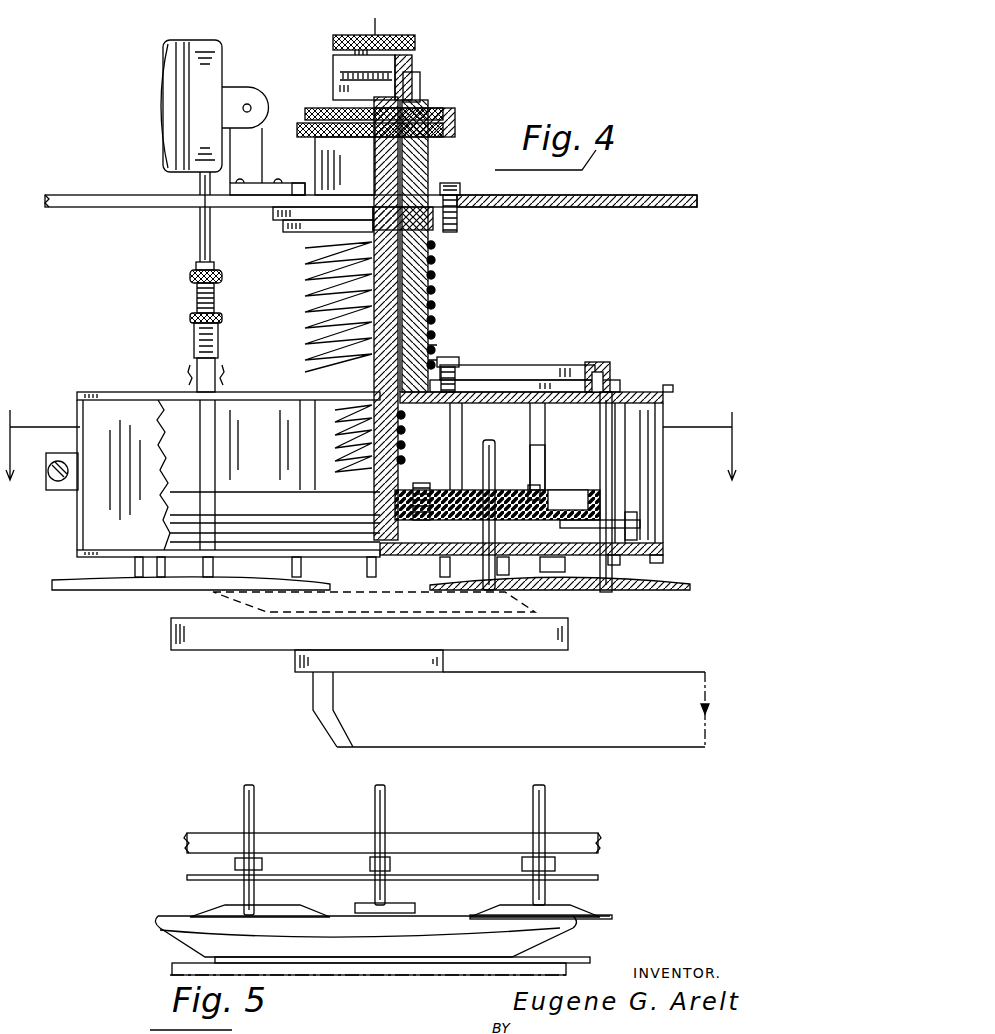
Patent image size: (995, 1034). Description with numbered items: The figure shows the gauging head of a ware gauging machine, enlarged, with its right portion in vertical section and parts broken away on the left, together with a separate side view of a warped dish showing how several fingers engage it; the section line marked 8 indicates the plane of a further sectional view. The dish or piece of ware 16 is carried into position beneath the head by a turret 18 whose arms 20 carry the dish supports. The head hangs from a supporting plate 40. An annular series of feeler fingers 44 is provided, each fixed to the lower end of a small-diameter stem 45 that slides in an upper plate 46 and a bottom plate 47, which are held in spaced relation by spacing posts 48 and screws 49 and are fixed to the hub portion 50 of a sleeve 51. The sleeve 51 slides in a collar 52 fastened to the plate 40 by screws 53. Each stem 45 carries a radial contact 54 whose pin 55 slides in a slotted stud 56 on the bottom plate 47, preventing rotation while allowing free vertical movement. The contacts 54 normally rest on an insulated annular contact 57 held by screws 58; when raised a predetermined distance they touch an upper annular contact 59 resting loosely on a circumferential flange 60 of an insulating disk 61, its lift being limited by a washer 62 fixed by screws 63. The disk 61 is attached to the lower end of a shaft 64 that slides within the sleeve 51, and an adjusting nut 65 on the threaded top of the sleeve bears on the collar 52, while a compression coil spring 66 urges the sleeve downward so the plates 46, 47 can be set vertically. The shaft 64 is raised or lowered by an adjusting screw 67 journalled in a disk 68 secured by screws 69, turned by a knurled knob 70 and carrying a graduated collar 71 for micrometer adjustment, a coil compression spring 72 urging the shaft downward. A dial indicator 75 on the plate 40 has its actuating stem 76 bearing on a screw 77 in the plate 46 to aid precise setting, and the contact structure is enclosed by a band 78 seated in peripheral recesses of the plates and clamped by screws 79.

In FIG. 4, the section line 8- 8 is at (369, 458).
In FIG. 4, the pieces of ware 16 is at (520, 610).
In FIG. 5, the pieces of ware 16 is at (382, 945).
In FIG. 4, the turret 18 is at (369, 634).
In FIG. 4, the arms 20 is at (502, 698).
In FIG. 4, the supporting plate 40 is at (625, 195).
In FIG. 4, the feeler fingers 44 is at (118, 597).
In FIG. 5, the feeler fingers 44 is at (275, 908).
In FIG. 4, the stem 45 is at (605, 428).
In FIG. 5, the stem 45 is at (545, 818).
In FIG. 4, the plate 46 is at (610, 392).
In FIG. 4, the bottom plate 47 is at (663, 556).
In FIG. 4, the spacing posts 48 is at (650, 480).
In FIG. 4, the screws 49 is at (672, 380).
In FIG. 4, the hub portion 50 is at (447, 357).
In FIG. 4, the sleeve 51 is at (412, 340).
In FIG. 4, the collar 52 is at (437, 257).
In FIG. 4, the screws 53 is at (455, 183).
In FIG. 4, the contact 54 is at (630, 512).
In FIG. 5, the contact 54 is at (262, 866).
In FIG. 4, the pin 55 is at (614, 565).
In FIG. 4, the slotted stud 56 is at (640, 522).
In FIG. 5, the annular contact 57 is at (598, 878).
In FIG. 4, the screws 58 is at (555, 565).
In FIG. 4, the upper annular contact 59 is at (568, 500).
In FIG. 5, the upper annular contact 59 is at (463, 832).
In FIG. 4, the circumferential flange 60 is at (515, 568).
In FIG. 4, the disk 61 is at (470, 488).
In FIG. 4, the washer 62 is at (548, 462).
In FIG. 4, the screws 63 is at (535, 490).
In FIG. 4, the shaft 64 is at (404, 448).
In FIG. 4, the adjusting nut 65 is at (445, 128).
In FIG. 4, the compression coil spring 66 is at (305, 334).
In FIG. 4, the adjusting screw 67 is at (415, 100).
In FIG. 4, the disk 68 is at (412, 62).
In FIG. 4, the screws 69 is at (420, 80).
In FIG. 4, the knurled knob 70 is at (333, 42).
In FIG. 4, the graduated collar 71 is at (333, 70).
In FIG. 4, the coil compression spring 72 is at (333, 440).
In FIG. 4, the dial indicator 75 is at (215, 78).
In FIG. 4, the actuating stem 76 is at (210, 250).
In FIG. 4, the screw 77 is at (214, 282).
In FIG. 4, the band 78 is at (670, 448).
In FIG. 4, the screws 79 is at (55, 482).